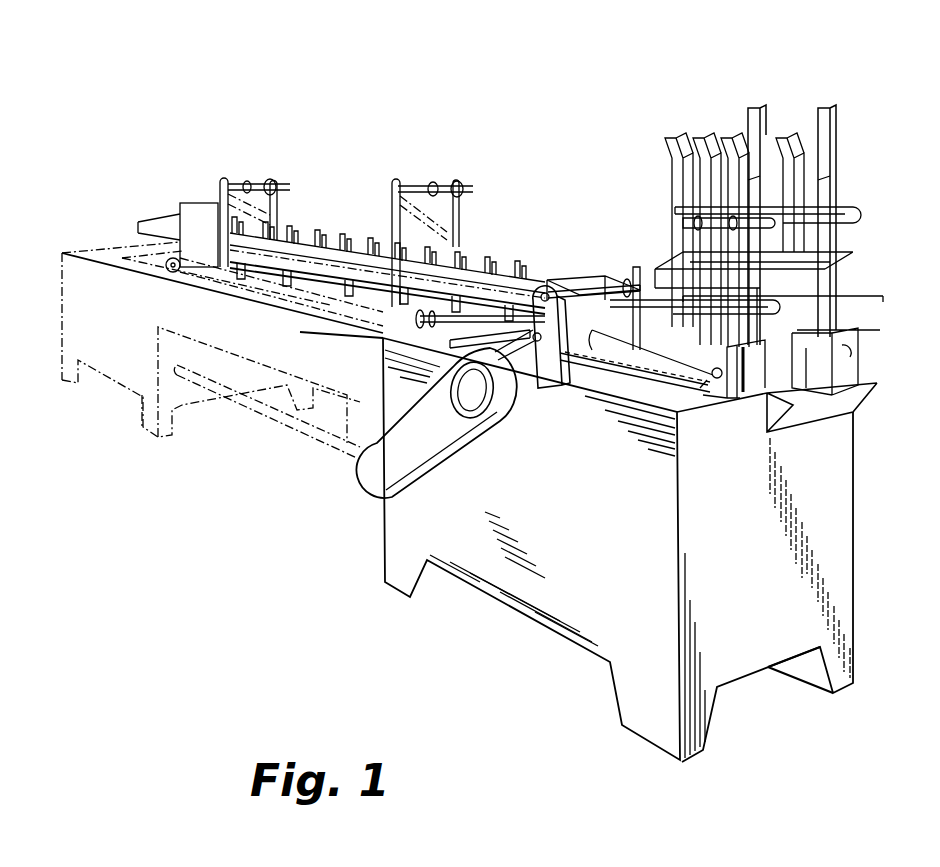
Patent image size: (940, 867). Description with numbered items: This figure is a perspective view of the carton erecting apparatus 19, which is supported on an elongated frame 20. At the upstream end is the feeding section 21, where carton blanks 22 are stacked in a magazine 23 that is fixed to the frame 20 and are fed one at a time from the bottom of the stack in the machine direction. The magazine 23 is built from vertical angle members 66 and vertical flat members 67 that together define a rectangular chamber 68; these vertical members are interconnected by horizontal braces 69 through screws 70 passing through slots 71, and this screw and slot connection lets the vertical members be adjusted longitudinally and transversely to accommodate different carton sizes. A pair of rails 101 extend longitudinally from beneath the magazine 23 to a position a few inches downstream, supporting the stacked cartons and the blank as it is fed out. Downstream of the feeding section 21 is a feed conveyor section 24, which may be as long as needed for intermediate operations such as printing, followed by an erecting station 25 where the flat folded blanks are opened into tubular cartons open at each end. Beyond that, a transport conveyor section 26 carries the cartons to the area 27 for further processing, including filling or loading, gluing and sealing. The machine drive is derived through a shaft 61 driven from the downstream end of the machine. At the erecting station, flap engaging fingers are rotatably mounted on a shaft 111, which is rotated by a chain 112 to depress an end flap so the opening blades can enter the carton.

The apparatus 19 is at (359, 606).
The elongated frame 20 is at (590, 513).
The feeding section 21 is at (751, 384).
The carton blanks 22 is at (803, 257).
The magazine 23 is at (842, 165).
The feed conveyor section 24 is at (605, 346).
The erecting station 25 is at (568, 265).
The transport conveyor section 26 is at (478, 252).
The area for further processing 27 is at (290, 176).
The shaft 61 is at (355, 457).
The vertical angle members 66 is at (677, 177).
The vertical flat members 67 is at (708, 170).
The rectangular chamber 68 is at (778, 140).
The horizontal braces 69 is at (677, 213).
The screws 70 is at (698, 225).
The slots 71 is at (770, 232).
The rails 101 is at (850, 352).
The shaft 111 is at (598, 290).
The chain 112 is at (543, 373).